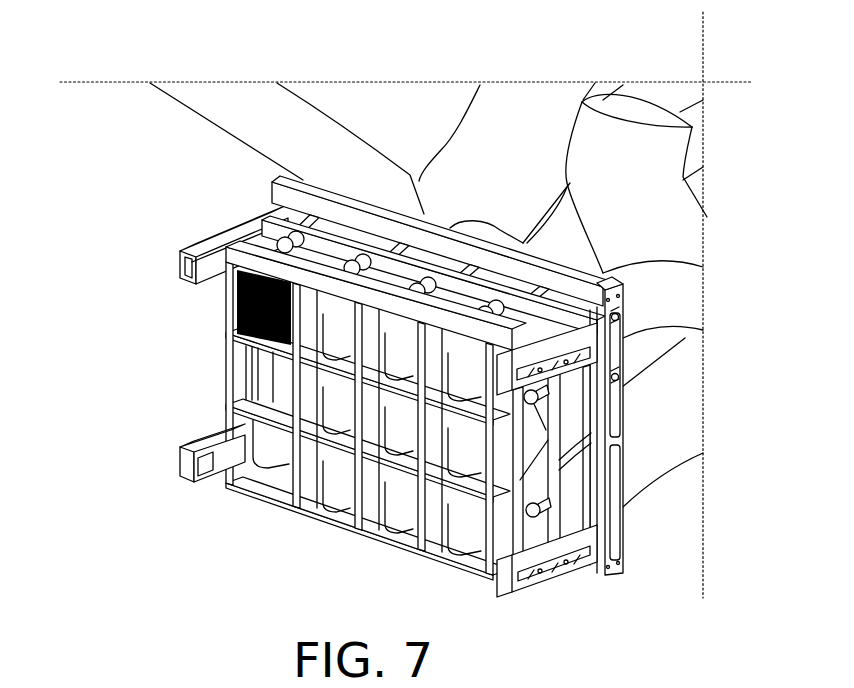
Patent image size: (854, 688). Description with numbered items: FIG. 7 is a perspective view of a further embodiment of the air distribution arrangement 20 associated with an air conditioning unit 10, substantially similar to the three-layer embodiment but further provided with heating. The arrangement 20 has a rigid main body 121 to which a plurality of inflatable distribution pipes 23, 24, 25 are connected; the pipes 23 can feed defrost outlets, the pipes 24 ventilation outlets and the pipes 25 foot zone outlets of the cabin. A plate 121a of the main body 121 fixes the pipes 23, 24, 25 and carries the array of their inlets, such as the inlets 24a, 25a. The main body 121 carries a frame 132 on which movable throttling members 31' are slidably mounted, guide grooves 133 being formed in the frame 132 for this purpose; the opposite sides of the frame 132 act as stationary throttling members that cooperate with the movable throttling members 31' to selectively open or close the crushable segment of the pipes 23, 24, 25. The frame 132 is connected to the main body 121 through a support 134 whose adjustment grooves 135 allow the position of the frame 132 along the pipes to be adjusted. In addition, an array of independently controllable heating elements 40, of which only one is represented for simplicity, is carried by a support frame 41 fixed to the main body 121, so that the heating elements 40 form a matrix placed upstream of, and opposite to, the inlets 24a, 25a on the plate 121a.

The air conditioning unit 10 is at (17, 675).
The arrangement 20 is at (705, 150).
The distribution pipes 23 is at (506, 240).
The distribution pipes 24 is at (643, 382).
The inlets 24a is at (490, 427).
The distribution pipes 25 is at (648, 432).
The inlets 25a is at (418, 500).
The movable throttling members 31' is at (690, 328).
The heating elements 40 is at (226, 305).
The support frame 41 is at (322, 409).
The main body 121 is at (242, 253).
The plate 121a is at (292, 500).
The frame 132 is at (259, 182).
The guide grooves 133 is at (620, 420).
The support 134 is at (575, 562).
The adjustment grooves 135 is at (535, 572).